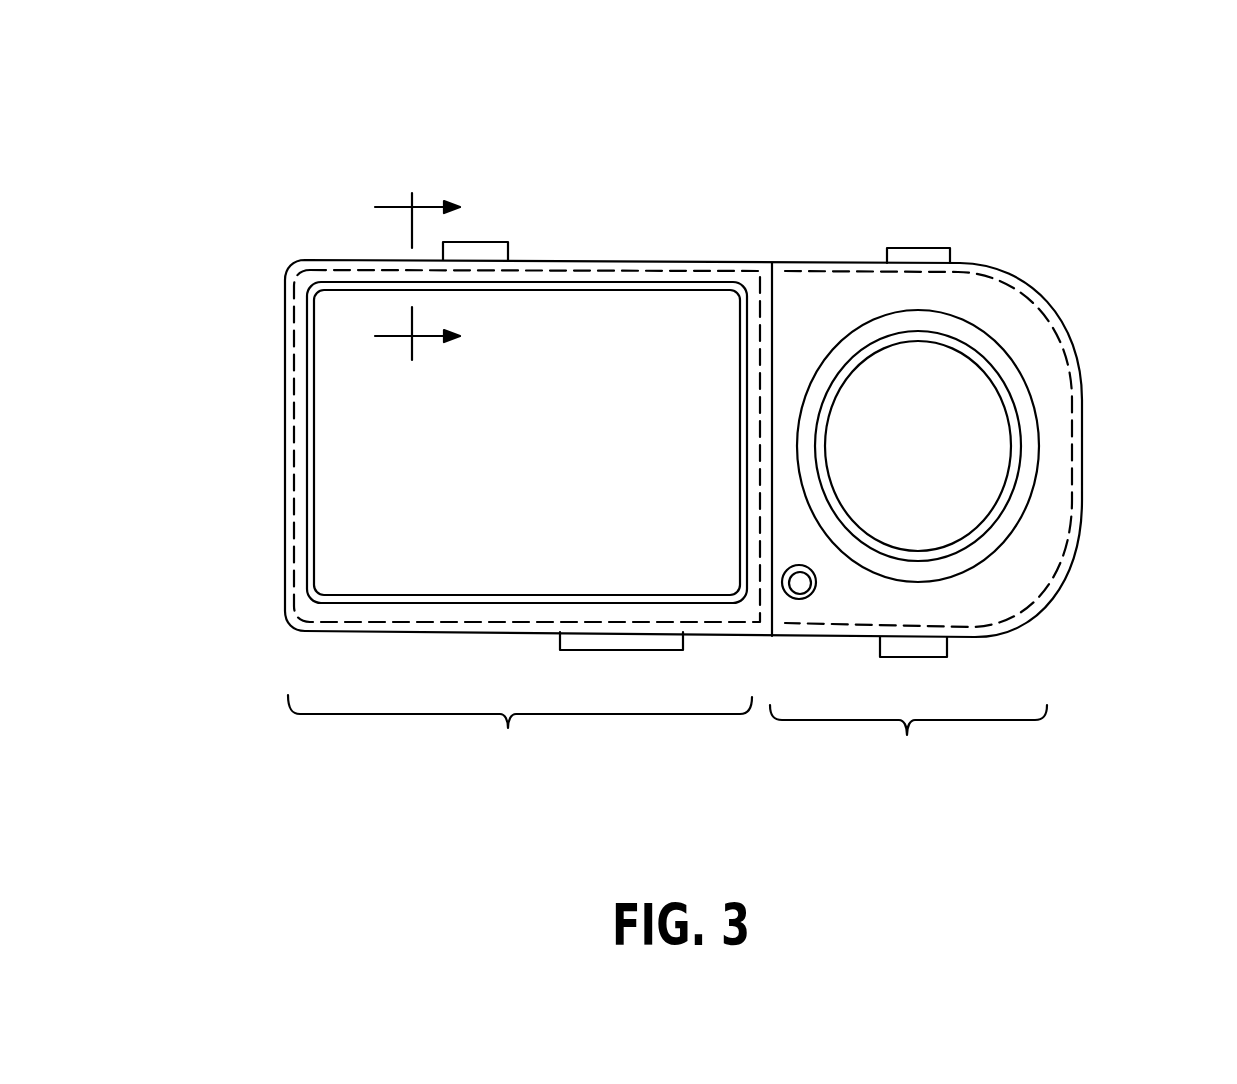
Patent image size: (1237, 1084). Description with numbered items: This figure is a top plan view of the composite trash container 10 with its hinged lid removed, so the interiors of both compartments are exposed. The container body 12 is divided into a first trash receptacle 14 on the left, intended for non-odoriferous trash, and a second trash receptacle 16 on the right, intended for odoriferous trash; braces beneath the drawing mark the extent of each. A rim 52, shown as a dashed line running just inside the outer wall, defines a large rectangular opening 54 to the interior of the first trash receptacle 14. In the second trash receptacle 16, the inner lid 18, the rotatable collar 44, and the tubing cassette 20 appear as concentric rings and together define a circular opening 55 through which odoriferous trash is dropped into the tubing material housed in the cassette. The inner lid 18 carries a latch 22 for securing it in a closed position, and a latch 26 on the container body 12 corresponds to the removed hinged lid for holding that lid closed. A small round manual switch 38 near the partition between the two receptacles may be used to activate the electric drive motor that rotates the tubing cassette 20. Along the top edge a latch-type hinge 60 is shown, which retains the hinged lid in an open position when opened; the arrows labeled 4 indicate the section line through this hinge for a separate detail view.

The composite trash container 10 is at (781, 200).
The container body 12 is at (662, 262).
The first trash receptacle 14 is at (486, 472).
The second trash receptacle 16 is at (981, 528).
The inner lid 18 is at (1053, 505).
The tubing cassette 20 is at (1020, 382).
The latch 22 is at (945, 655).
The latch 26 is at (607, 651).
The manual switch 38 is at (800, 600).
The rotatable collar 44 is at (1020, 450).
The rim 52 is at (297, 355).
The opening 54 is at (563, 448).
The opening 55 is at (933, 453).
The latch-type hinge 60 is at (500, 243).
The section line 4- 4 is at (417, 280).